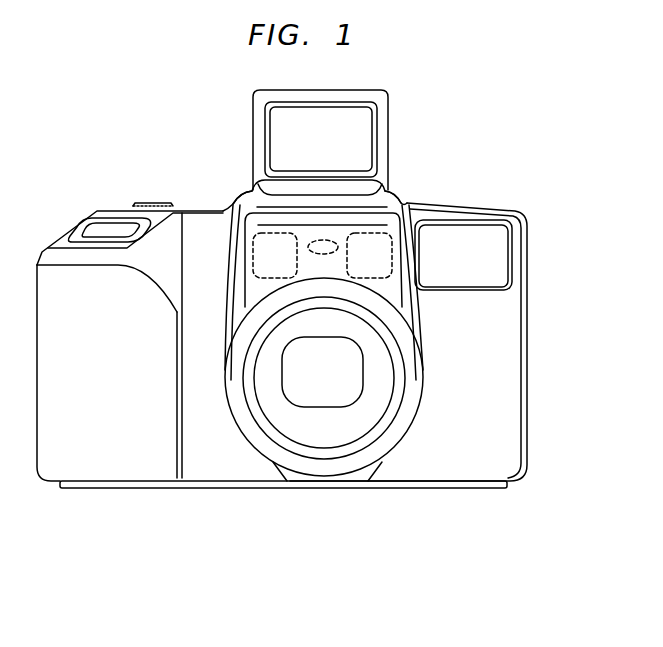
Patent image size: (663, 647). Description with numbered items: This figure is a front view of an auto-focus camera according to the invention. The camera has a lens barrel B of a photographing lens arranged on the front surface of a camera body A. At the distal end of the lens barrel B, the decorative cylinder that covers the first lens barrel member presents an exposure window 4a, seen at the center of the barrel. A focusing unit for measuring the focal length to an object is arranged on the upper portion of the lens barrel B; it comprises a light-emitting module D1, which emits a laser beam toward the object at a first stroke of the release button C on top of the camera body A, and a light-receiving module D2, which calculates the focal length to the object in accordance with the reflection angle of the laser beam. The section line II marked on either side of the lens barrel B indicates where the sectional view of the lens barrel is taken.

The camera body A is at (507, 398).
The lens barrel B is at (410, 427).
The release button C is at (105, 226).
The light-emitting module D1 is at (252, 197).
The light-receiving module D2 is at (393, 197).
The exposure window 4a is at (283, 388).
The section line II- II is at (215, 370).